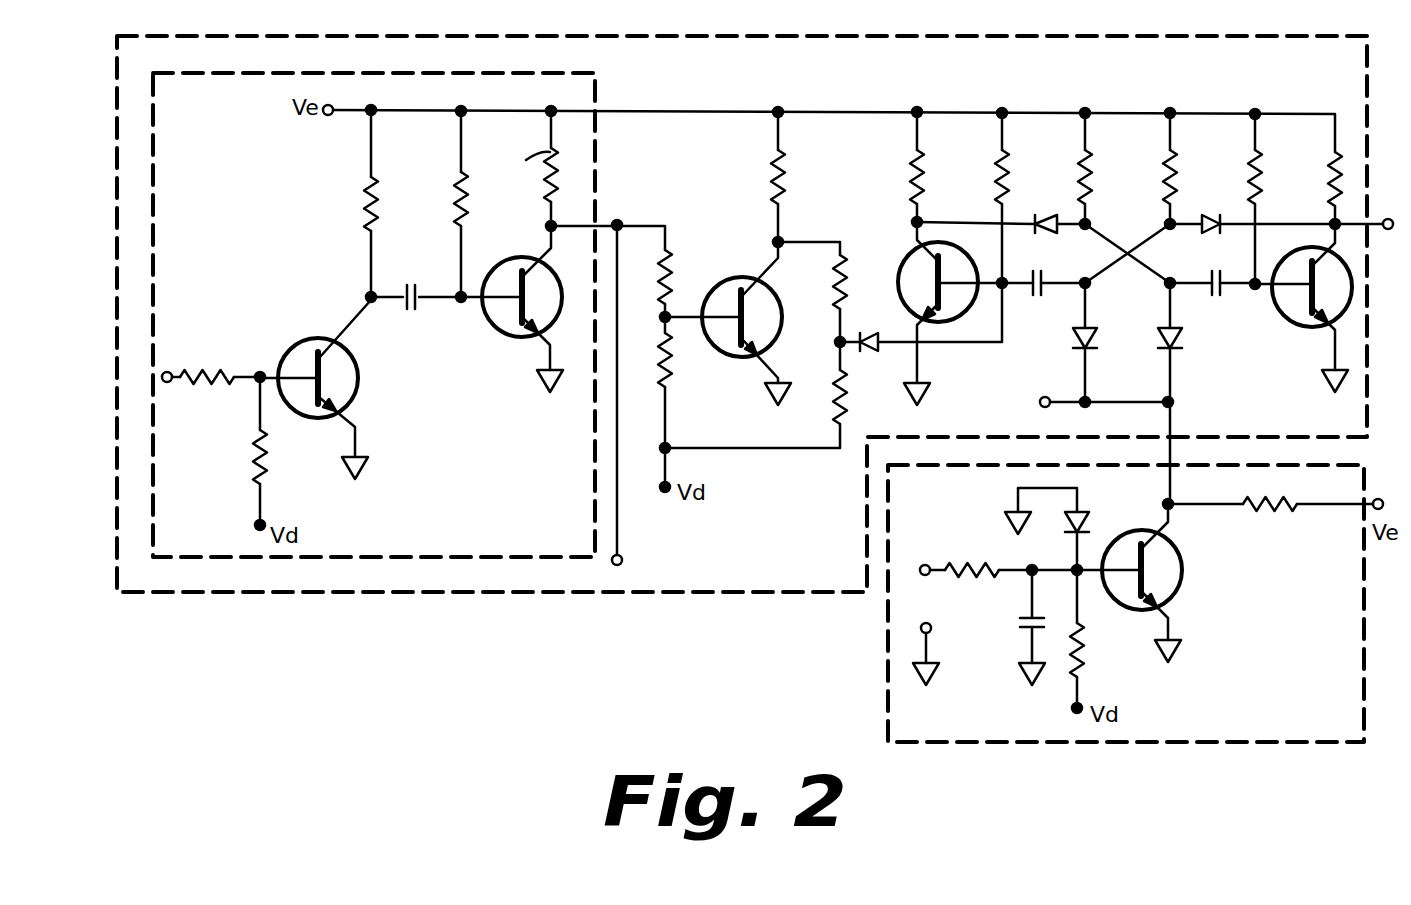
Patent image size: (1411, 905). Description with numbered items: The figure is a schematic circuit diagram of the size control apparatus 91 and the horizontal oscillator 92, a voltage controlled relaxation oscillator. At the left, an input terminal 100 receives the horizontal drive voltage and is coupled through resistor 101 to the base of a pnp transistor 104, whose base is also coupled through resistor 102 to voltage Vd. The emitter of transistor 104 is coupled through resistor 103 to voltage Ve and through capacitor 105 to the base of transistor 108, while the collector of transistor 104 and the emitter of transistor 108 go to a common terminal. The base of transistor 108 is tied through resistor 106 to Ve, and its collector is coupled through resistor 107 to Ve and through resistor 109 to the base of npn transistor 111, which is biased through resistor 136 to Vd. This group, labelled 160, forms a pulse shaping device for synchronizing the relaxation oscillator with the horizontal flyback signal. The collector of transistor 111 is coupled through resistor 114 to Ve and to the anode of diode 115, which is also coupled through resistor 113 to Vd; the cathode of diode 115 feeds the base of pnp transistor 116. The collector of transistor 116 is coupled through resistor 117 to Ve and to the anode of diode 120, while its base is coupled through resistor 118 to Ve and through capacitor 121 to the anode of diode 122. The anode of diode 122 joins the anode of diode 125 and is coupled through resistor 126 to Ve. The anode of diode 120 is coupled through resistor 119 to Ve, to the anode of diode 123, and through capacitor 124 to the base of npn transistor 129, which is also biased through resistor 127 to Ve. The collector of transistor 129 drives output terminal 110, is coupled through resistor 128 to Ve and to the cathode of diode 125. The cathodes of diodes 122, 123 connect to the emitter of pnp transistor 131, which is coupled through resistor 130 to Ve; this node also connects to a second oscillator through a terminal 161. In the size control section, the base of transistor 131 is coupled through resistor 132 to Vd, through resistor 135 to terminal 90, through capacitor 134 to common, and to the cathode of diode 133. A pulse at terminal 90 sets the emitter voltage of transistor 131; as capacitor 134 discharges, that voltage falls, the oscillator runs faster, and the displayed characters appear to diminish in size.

The terminal 90 is at (920, 575).
The size control apparatus 91 is at (885, 695).
The horizontal oscillator 92 is at (715, 37).
The input terminal 100 is at (205, 350).
The resistor 101 is at (250, 352).
The resistor 102 is at (255, 455).
The resistor 103 is at (365, 208).
The pnp transistor 104 is at (358, 405).
The capacitor 105 is at (412, 310).
The resistor 106 is at (460, 180).
The resistor 107 is at (518, 168).
The transistor 108 is at (505, 340).
The resistor 109 is at (672, 260).
The terminal 110 is at (1388, 230).
The npn transistor 111 is at (775, 330).
The resistor 113 is at (845, 415).
The resistor 114 is at (785, 165).
The diode 115 is at (880, 345).
The pnp transistor 116 is at (905, 268).
The resistor 117 is at (915, 160).
The resistor 118 is at (1000, 165).
The resistor 119 is at (1092, 165).
The diode 120 is at (1052, 194).
The capacitor 121 is at (1042, 295).
The diode 122 is at (1075, 348).
The diode 123 is at (1182, 342).
The capacitor 124 is at (1222, 295).
The diode 125 is at (1195, 240).
The resistor 126 is at (1177, 168).
The resistor 127 is at (1262, 165).
The resistor 128 is at (1330, 200).
The npn transistor 129 is at (1298, 330).
The resistor 130 is at (1285, 512).
The pnp transistor 131 is at (1182, 578).
The resistor 132 is at (1085, 660).
The diode 133 is at (1085, 518).
The capacitor 134 is at (1028, 632).
The resistor 135 is at (985, 536).
The resistor 136 is at (672, 375).
The pulse shaping section 160 is at (350, 558).
The control terminal 161 is at (1040, 408).